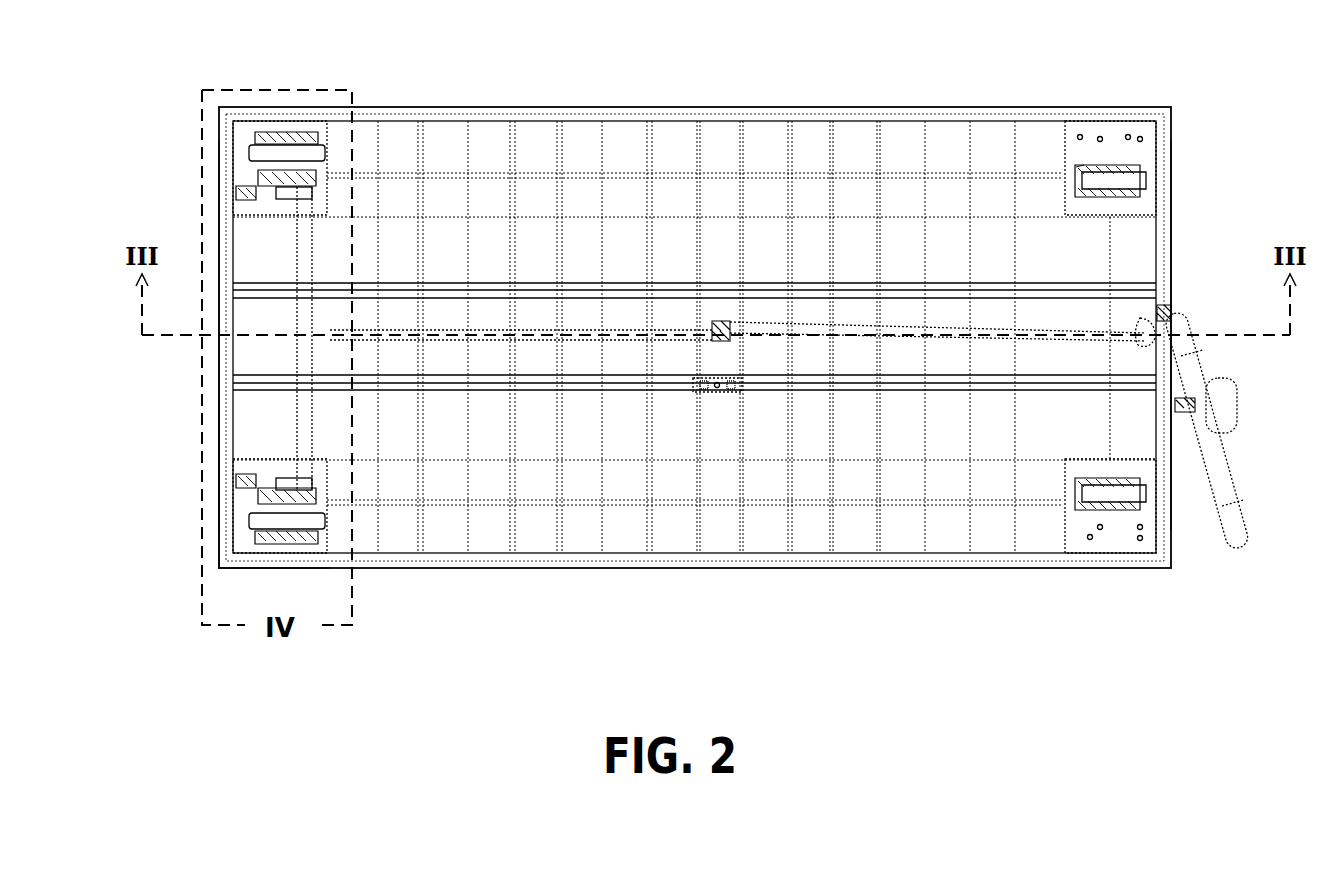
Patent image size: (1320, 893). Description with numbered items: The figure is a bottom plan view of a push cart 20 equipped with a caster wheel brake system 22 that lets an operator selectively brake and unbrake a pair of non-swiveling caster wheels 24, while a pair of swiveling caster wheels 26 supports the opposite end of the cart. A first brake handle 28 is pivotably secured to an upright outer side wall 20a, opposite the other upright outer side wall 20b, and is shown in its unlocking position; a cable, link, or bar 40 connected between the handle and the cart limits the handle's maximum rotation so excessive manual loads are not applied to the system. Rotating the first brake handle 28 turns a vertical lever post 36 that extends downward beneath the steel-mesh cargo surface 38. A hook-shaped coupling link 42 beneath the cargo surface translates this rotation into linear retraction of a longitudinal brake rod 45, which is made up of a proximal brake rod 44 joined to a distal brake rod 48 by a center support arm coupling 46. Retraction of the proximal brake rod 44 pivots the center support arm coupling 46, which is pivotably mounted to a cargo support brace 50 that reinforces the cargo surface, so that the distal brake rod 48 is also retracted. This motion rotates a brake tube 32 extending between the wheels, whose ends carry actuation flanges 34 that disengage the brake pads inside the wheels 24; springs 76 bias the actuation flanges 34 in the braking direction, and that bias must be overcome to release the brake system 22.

The push cart 20 is at (1072, 76).
The upright outer side wall 20a is at (1182, 185).
The upright outer side wall 20b is at (212, 178).
The caster wheel brake system 22 is at (192, 528).
The non-swiveling caster wheels 24 is at (325, 150).
The swiveling caster wheels 26 is at (1145, 183).
The first brake handle 28 is at (1245, 520).
The brake tube 32 is at (310, 253).
The actuation flanges 34 is at (318, 183).
The vertical lever post 36 is at (1170, 316).
The steel-mesh cargo surface 38 is at (1112, 261).
The bar 40 is at (1182, 412).
The hook-shaped coupling link 42 is at (1143, 328).
The proximal brake rod 44 is at (810, 322).
The longitudinal brake rod 45 is at (776, 357).
The center support arm coupling 46 is at (720, 322).
The distal brake rod 48 is at (622, 333).
The cargo support brace 50 is at (782, 393).
The springs 76 is at (281, 196).